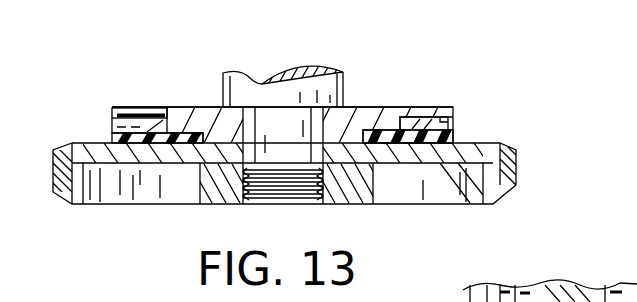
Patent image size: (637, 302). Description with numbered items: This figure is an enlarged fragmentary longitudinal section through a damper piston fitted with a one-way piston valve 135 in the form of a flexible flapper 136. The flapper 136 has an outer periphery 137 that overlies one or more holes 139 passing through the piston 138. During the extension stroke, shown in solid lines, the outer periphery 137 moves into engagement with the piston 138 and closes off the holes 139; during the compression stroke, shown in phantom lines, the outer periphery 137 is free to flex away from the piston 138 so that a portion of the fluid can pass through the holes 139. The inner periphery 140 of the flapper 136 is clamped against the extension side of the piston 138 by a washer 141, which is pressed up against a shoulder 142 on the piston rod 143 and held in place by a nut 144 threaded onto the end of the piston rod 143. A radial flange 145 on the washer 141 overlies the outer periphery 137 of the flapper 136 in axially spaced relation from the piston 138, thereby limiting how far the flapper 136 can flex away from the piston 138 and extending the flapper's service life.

The piston valve 135 is at (466, 115).
The flexible flapper 136 is at (158, 133).
The outer periphery 137 is at (118, 133).
The piston 138 is at (407, 153).
The holes 139 is at (128, 163).
The inner periphery 140 is at (175, 150).
The washer 141 is at (370, 112).
The shoulder 142 is at (237, 107).
The piston rod 143 is at (272, 88).
The nut 144 is at (350, 200).
The radial flange 145 is at (430, 110).